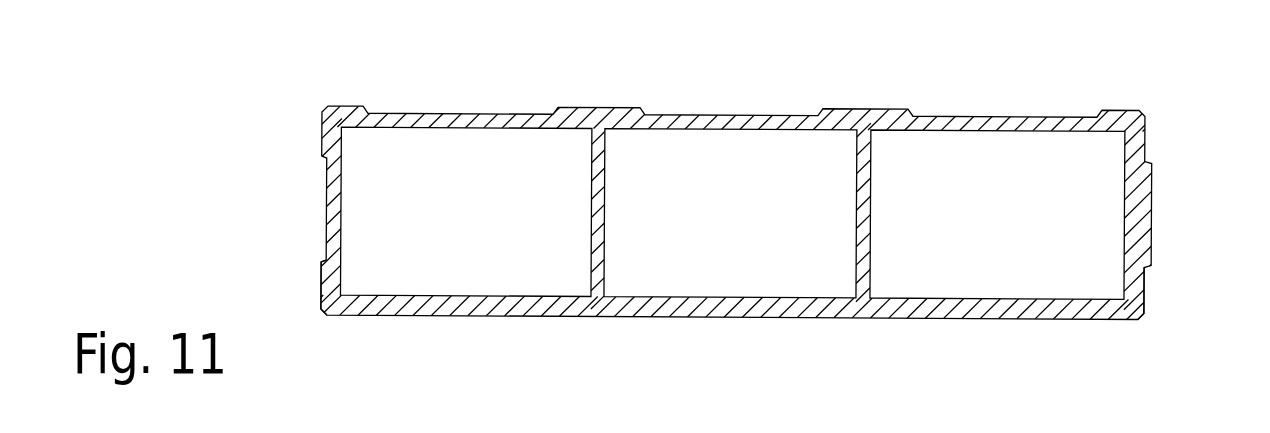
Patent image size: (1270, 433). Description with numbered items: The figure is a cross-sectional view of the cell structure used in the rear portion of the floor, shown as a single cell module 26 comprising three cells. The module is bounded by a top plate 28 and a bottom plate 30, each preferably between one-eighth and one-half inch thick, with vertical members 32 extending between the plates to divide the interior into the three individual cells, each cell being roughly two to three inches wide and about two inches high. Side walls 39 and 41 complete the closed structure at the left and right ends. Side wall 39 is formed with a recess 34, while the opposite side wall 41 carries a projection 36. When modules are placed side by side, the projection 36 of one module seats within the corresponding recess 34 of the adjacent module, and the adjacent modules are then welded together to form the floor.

The cell module 26 is at (1054, 69).
The top plate 28 is at (788, 117).
The bottom plate 30 is at (753, 318).
The vertical members 32 is at (591, 272).
The recess 34 is at (288, 194).
The projection 36 is at (1152, 193).
The side wall 39 is at (318, 282).
The side wall 41 is at (1143, 292).